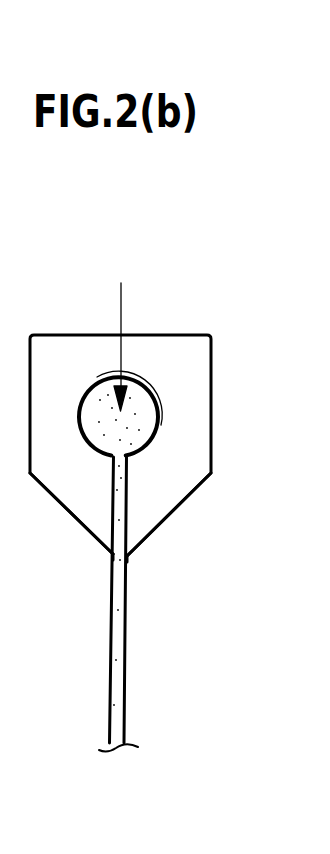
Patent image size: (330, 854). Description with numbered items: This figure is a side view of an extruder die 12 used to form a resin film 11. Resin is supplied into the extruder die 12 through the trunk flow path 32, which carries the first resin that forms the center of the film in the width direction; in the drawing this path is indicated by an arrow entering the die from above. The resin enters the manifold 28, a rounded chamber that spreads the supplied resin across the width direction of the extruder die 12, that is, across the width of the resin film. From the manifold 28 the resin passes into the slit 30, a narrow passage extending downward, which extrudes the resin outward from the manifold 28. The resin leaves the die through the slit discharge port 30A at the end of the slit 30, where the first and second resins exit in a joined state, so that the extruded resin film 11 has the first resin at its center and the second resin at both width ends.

The extruder die 12 is at (232, 288).
The manifold 28 is at (150, 430).
The slit 30 is at (125, 507).
The slit discharge port 30A is at (125, 558).
The resin film 11 is at (125, 633).
The trunk flow path 32 is at (118, 310).